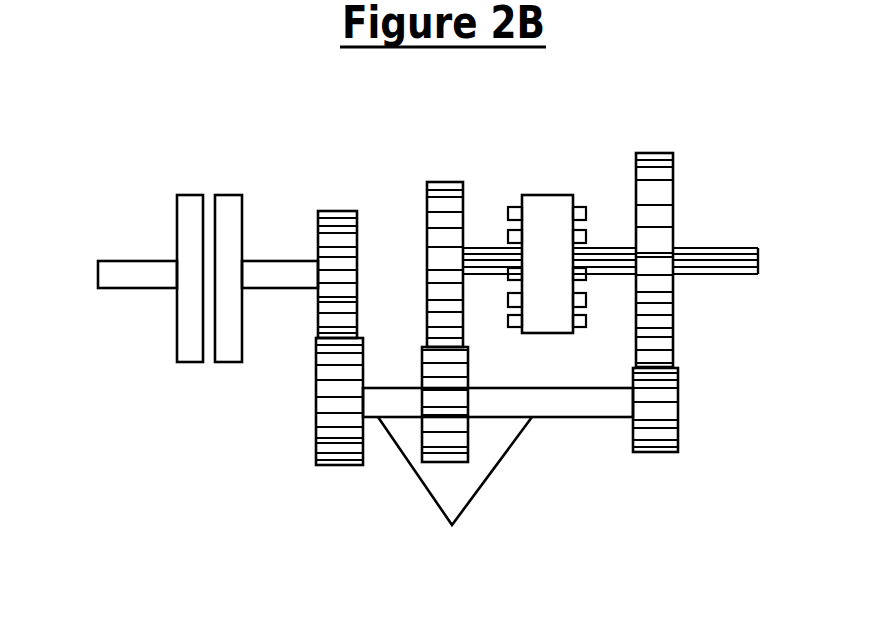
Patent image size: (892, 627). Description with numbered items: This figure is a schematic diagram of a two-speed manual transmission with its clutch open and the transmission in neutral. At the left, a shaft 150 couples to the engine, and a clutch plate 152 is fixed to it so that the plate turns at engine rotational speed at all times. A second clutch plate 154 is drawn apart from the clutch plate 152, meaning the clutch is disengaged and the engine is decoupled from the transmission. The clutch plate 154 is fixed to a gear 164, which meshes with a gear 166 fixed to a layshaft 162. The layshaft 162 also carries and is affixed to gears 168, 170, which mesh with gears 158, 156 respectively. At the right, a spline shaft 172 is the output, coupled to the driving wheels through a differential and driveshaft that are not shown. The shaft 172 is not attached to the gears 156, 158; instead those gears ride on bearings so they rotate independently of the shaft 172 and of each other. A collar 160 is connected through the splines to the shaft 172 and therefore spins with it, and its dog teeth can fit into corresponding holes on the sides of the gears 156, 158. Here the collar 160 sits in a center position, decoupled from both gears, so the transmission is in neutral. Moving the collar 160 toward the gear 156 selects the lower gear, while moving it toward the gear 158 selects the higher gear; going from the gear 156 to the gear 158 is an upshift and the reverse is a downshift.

The shaft 150 is at (132, 260).
The clutch plate 152 is at (197, 195).
The clutch plate 154 is at (222, 195).
The gear 164 is at (338, 211).
The gear 166 is at (336, 465).
The gear 158 is at (440, 182).
The gear 168 is at (466, 387).
The collar 160 is at (543, 195).
The gear 156 is at (656, 153).
The gear 170 is at (659, 452).
The spline shaft 172 is at (720, 248).
The layshaft 162 is at (498, 479).